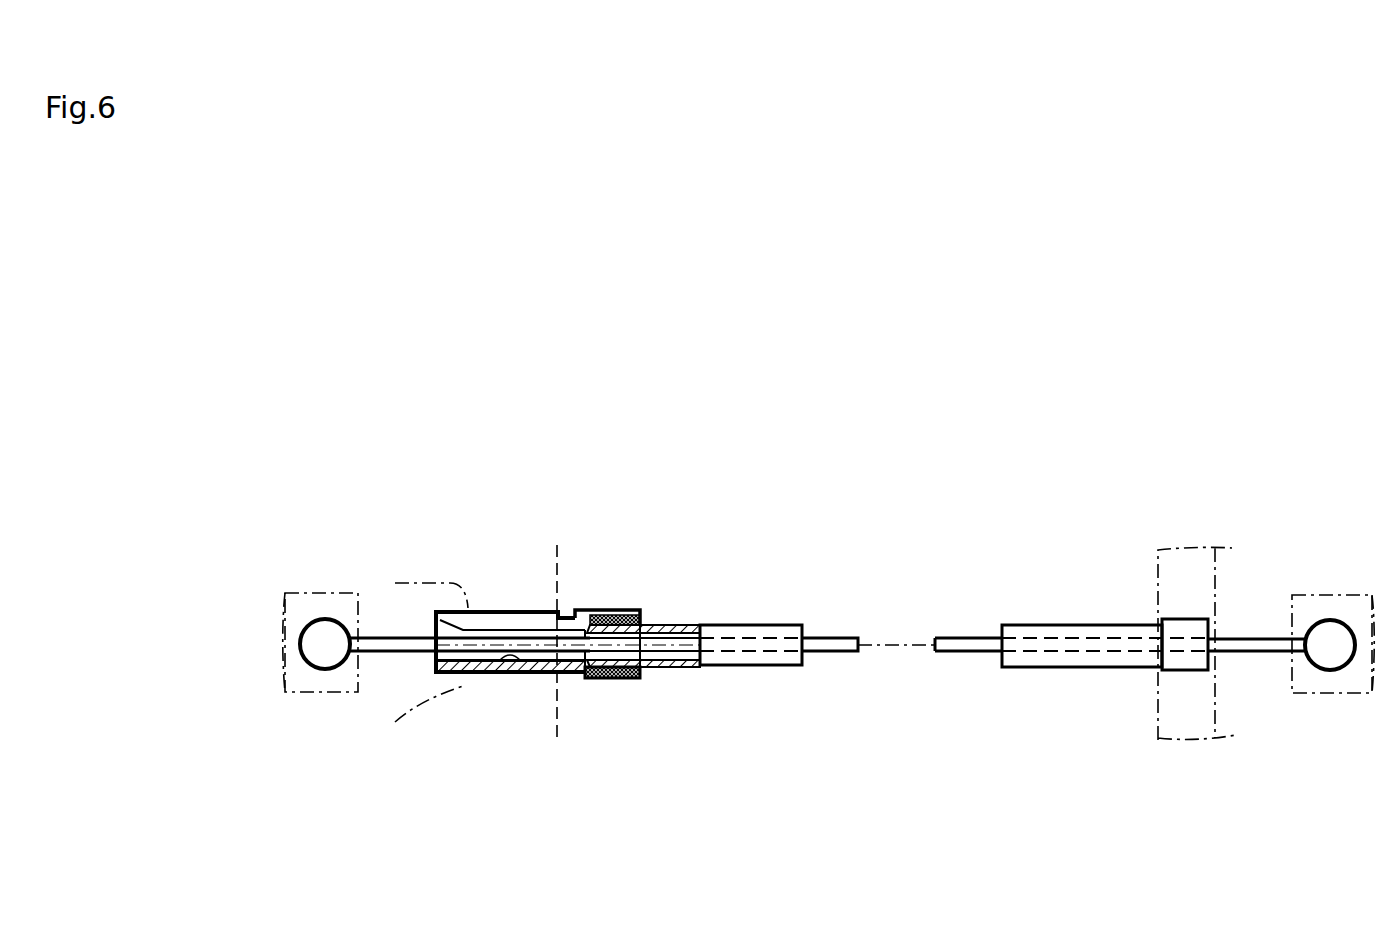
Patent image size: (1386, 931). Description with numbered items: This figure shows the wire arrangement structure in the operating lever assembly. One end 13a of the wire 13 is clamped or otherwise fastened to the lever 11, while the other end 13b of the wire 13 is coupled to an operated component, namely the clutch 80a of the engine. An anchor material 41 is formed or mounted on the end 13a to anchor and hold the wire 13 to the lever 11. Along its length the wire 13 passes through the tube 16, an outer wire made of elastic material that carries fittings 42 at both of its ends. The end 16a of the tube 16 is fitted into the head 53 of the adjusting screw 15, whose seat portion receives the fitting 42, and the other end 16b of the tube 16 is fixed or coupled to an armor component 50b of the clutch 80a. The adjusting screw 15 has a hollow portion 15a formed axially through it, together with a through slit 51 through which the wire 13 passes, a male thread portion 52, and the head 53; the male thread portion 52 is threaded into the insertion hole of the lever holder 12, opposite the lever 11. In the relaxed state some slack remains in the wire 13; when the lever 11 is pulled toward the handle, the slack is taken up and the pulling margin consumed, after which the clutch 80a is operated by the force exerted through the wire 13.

The lever 11 is at (327, 695).
The lever holder 12 is at (560, 575).
The wire 13 is at (837, 638).
The one end of the wire 13a is at (315, 605).
The other end of the wire 13b is at (1340, 605).
The adjusting screw 15 is at (577, 679).
The hollow portion 15a is at (517, 673).
The tube 16 is at (757, 624).
The end of the tube 16a is at (627, 610).
The other end of the tube 16b is at (1172, 672).
The anchor material 41 is at (340, 620).
The fitting 42 is at (610, 679).
The armor component 50b is at (1158, 705).
The slit 51 is at (508, 610).
The male thread portion 52 is at (470, 673).
The head 53 is at (638, 679).
The clutch 80a is at (1322, 695).